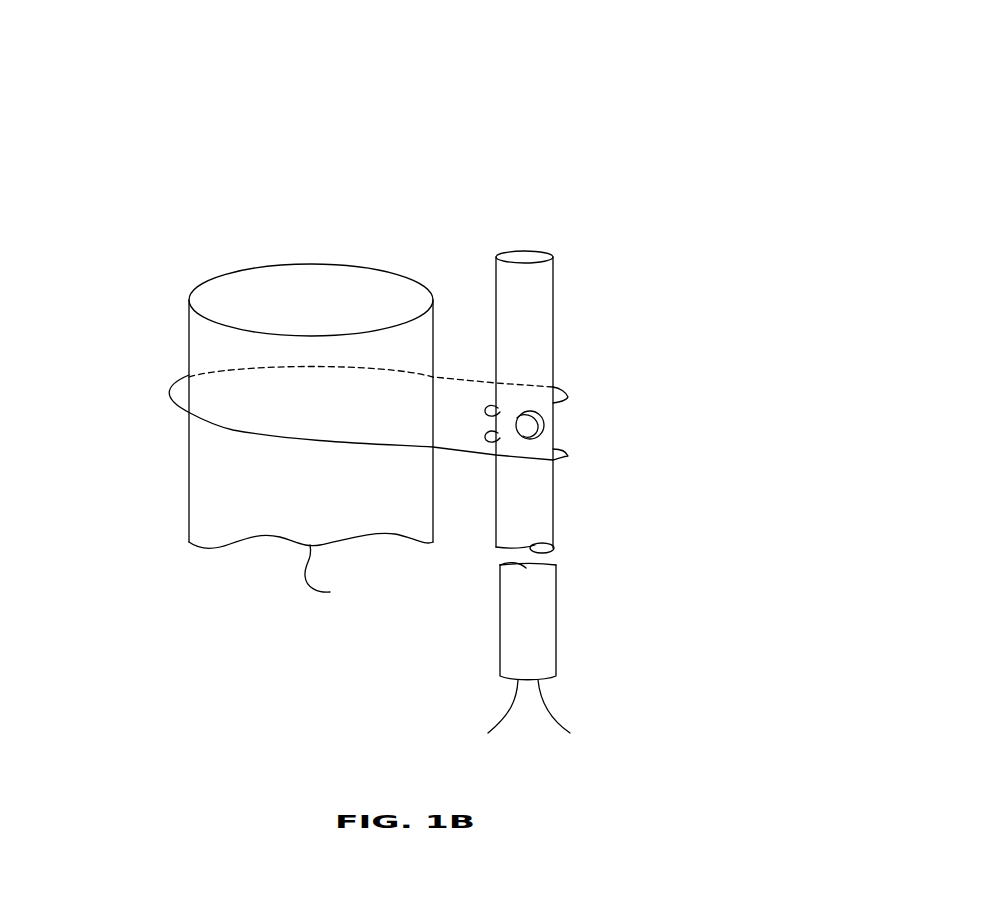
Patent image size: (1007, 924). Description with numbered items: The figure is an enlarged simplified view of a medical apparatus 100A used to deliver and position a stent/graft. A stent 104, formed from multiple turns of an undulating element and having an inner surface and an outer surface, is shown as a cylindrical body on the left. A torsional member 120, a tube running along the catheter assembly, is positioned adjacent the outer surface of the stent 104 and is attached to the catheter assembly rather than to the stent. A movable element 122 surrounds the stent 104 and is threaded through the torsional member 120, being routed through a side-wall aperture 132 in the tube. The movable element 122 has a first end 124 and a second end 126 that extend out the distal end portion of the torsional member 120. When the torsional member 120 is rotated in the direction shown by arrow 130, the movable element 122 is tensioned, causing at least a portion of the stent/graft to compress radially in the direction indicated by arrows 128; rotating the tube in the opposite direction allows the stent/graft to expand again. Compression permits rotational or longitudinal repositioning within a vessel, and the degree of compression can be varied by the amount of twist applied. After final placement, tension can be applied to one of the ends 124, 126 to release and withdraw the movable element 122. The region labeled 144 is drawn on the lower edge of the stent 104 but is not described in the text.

The medical apparatus 100A is at (480, 116).
The stent 104 is at (189, 522).
The torsional member 120 is at (553, 315).
The movable element 122 is at (233, 430).
The first end 124 is at (550, 715).
The second end 126 is at (510, 710).
The arrows 128 is at (258, 254).
The arrow 130 is at (486, 214).
The side-wall aperture 132 is at (545, 424).
The surface 144 is at (339, 571).